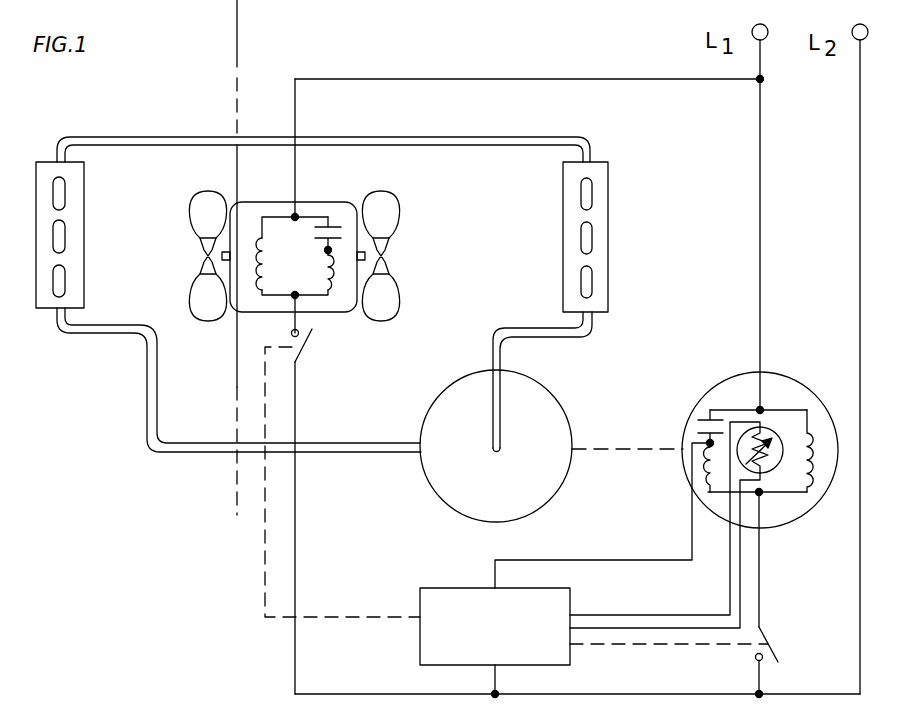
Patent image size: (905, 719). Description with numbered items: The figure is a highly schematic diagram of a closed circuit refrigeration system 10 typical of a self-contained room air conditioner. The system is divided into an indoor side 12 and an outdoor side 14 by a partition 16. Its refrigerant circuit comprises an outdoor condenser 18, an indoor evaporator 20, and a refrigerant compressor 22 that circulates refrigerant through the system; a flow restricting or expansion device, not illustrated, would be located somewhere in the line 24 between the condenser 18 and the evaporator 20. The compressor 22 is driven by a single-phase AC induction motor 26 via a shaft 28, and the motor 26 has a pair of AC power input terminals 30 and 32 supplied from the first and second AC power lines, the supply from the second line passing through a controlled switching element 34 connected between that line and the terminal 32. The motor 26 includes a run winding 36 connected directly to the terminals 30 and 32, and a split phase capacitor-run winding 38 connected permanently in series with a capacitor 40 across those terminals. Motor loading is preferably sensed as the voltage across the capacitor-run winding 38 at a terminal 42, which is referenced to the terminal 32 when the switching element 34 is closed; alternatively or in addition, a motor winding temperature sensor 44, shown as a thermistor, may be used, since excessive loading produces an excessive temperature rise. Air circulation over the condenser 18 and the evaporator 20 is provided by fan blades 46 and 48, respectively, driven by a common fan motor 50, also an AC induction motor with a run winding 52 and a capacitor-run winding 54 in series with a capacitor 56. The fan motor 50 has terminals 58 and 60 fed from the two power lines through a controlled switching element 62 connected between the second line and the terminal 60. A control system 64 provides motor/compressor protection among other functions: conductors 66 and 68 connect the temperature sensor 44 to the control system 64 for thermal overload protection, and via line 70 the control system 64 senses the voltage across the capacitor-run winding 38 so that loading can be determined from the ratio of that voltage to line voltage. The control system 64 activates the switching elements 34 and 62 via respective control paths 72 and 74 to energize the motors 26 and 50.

The closed circuit refrigeration system 10 is at (553, 58).
The indoor side 12 is at (178, 84).
The outdoor side 14 is at (274, 84).
The partition 16 is at (236, 72).
The outdoor condenser 18 is at (608, 230).
The indoor evaporator 20 is at (44, 162).
The refrigerant compressor 22 is at (567, 410).
The line 24 is at (350, 136).
The single-phase AC induction motor 26 is at (808, 372).
The shaft 28 is at (600, 450).
The AC power input terminal 30 is at (758, 408).
The AC power input terminal 32 is at (761, 494).
The controlled switching element 34 is at (782, 657).
The run winding 36 is at (810, 436).
The capacitor-run winding 38 is at (706, 470).
The capacitor 40 is at (702, 420).
The terminal 42 is at (708, 443).
The motor winding temperature sensor 44 is at (766, 428).
The fan blade 46 is at (384, 204).
The fan blade 48 is at (207, 200).
The fan motor 50 is at (313, 202).
The run winding 52 is at (264, 258).
The capacitor-run winding 54 is at (326, 282).
The capacitor 56 is at (338, 226).
The terminal 58 is at (293, 216).
The terminal 60 is at (293, 296).
The controlled switching element 62 is at (318, 341).
The control system 64 is at (420, 628).
The conductor 66 is at (692, 614).
The conductor 68 is at (688, 630).
The line 70 is at (582, 562).
The control path 72 is at (616, 652).
The control path 74 is at (262, 578).